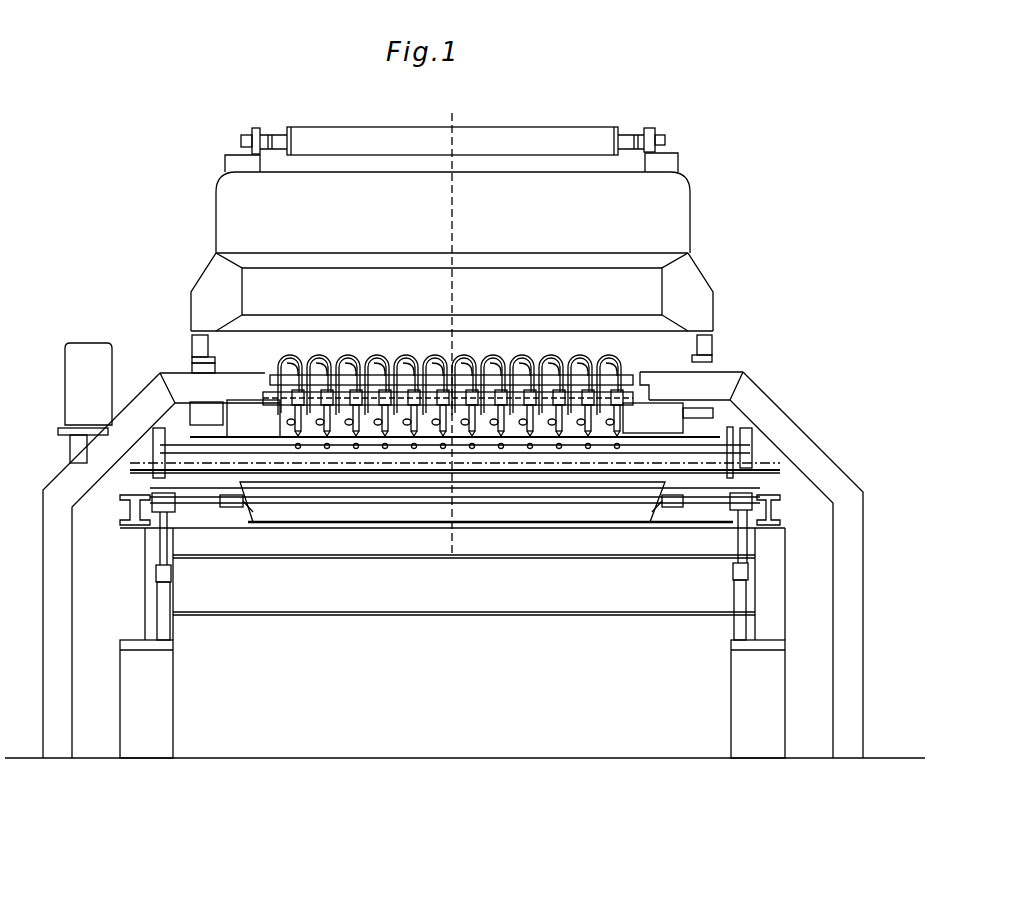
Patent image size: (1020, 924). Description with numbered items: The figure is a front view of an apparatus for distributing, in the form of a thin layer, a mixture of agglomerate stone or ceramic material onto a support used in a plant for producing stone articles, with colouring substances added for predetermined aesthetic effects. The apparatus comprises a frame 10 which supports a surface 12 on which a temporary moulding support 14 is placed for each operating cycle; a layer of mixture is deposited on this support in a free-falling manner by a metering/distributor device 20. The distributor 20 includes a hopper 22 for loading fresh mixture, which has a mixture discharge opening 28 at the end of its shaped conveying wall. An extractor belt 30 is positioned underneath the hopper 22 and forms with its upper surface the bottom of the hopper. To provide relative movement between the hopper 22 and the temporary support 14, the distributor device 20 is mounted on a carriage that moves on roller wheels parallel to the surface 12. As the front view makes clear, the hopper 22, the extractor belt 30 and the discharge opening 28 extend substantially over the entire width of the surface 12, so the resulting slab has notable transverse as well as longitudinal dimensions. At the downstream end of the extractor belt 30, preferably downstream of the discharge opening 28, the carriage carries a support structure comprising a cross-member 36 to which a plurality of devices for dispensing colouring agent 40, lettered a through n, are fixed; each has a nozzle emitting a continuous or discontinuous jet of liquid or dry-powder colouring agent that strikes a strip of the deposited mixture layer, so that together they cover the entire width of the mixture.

The frame 10 is at (190, 703).
The surface 12 is at (300, 525).
The temporary moulding support 14 is at (635, 490).
The metering/distributor device 20 is at (695, 184).
The hopper 22 is at (243, 213).
The mixture discharge opening 28 is at (230, 367).
The extractor belt 30 is at (740, 457).
The cross-member 36 is at (663, 390).
The device for dispensing colouring agent 40 is at (267, 352).